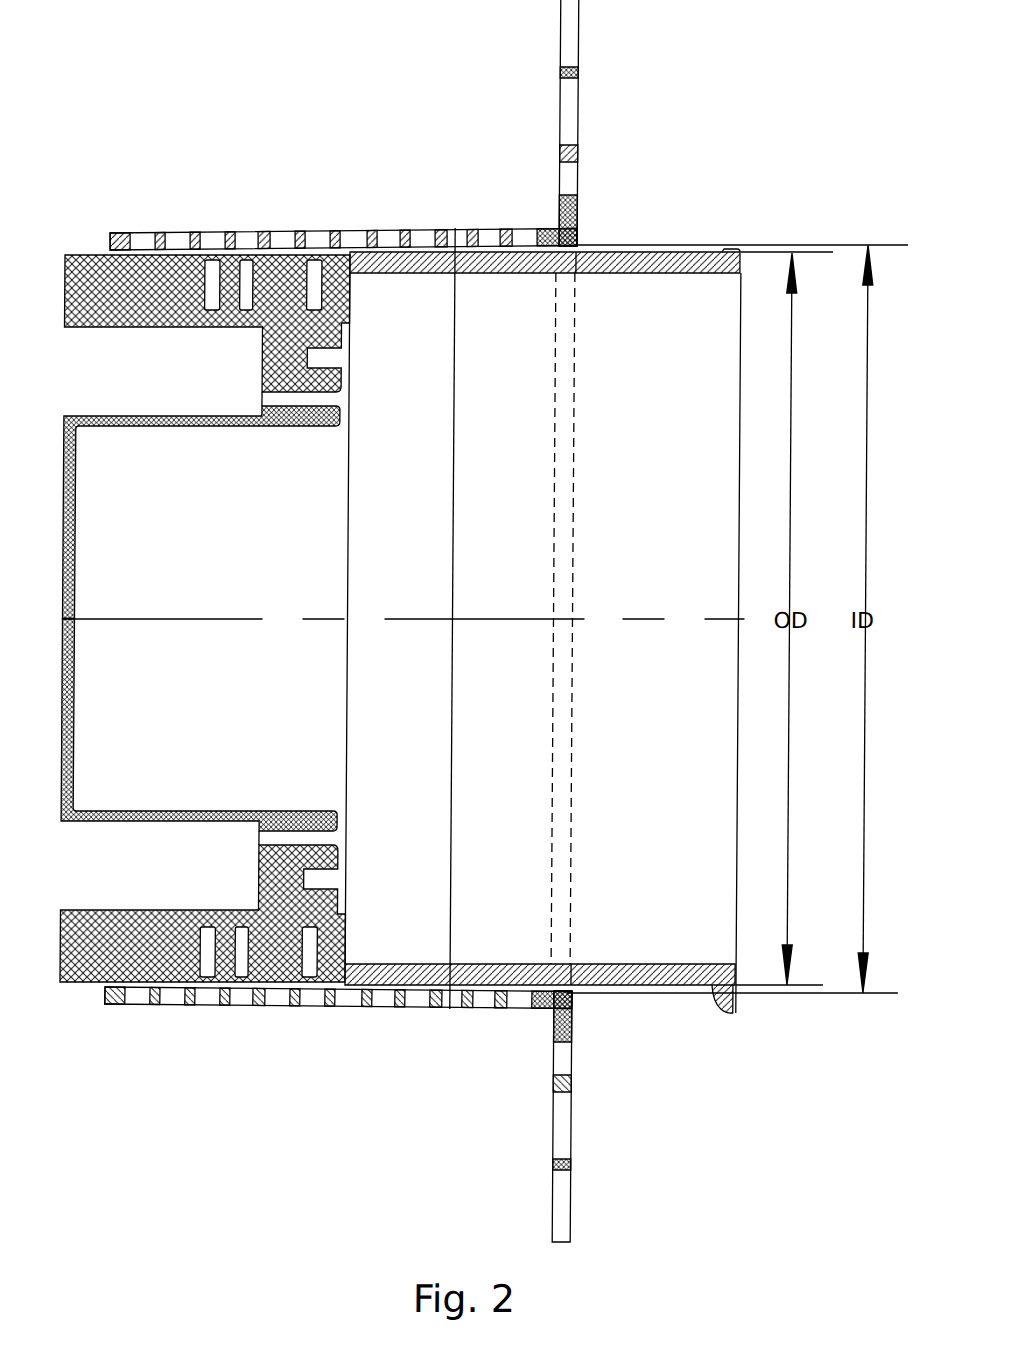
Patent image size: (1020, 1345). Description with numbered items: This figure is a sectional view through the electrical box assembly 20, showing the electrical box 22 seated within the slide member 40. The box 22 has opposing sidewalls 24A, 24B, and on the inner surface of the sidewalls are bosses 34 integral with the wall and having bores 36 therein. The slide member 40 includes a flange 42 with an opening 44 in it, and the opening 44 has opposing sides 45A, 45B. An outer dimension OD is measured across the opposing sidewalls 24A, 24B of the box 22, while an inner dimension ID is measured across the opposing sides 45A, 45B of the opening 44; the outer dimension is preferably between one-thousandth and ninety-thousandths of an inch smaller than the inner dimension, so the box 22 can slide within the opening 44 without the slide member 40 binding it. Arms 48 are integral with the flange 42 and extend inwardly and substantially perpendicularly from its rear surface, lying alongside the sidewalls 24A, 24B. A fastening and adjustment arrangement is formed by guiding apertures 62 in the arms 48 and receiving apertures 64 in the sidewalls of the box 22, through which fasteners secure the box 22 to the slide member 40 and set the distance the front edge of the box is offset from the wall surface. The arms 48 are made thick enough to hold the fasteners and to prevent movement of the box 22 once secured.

The electrical box assembly 20 is at (686, 1100).
The electrical box 22 is at (570, 552).
The opposing sidewall 24A is at (642, 273).
The opposing sidewall 24B is at (686, 966).
The boss 34 is at (341, 419).
The bore 36 is at (341, 399).
The slide member 40 is at (537, 621).
The flange 42 is at (566, 57).
The opening 44 is at (582, 565).
The opposing side 45A is at (577, 275).
The opposing side 45B is at (575, 965).
The arm 48 is at (199, 537).
The guiding aperture 62 is at (248, 262).
The receiving aperture 64 is at (212, 311).